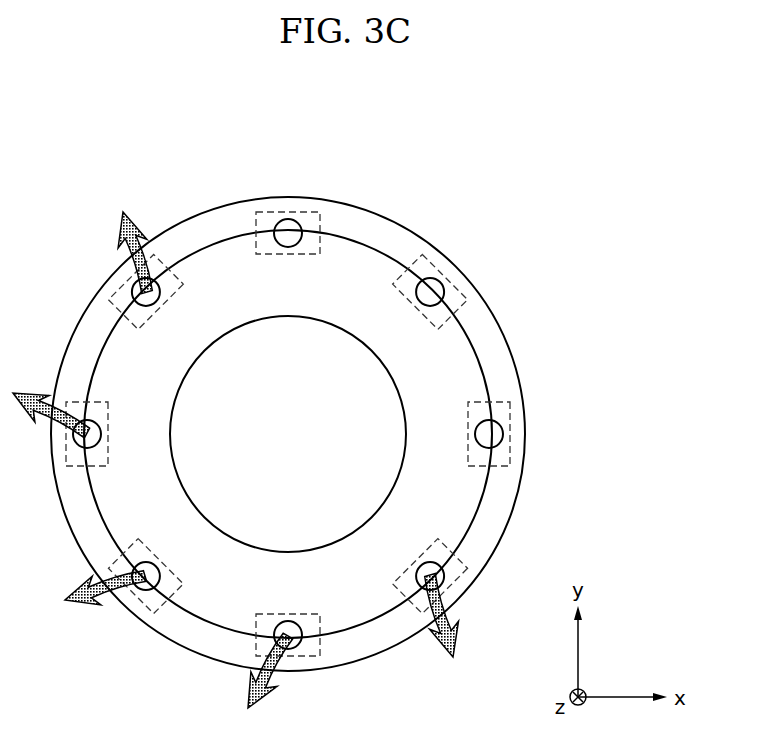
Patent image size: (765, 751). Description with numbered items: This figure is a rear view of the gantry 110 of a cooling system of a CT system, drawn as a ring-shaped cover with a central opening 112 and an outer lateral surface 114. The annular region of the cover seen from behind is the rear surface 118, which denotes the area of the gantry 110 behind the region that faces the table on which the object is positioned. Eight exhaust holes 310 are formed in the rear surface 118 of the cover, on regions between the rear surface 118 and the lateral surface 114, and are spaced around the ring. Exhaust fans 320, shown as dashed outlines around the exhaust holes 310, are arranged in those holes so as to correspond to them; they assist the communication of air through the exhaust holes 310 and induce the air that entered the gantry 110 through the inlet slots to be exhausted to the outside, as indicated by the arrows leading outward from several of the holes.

The gantry 110 is at (527, 341).
The opening / hole 112 is at (370, 483).
The lateral surface 114 is at (397, 237).
The rear surface 118 is at (445, 383).
The exhaust holes 310 is at (288, 230).
The exhaust fans 320 is at (458, 288).